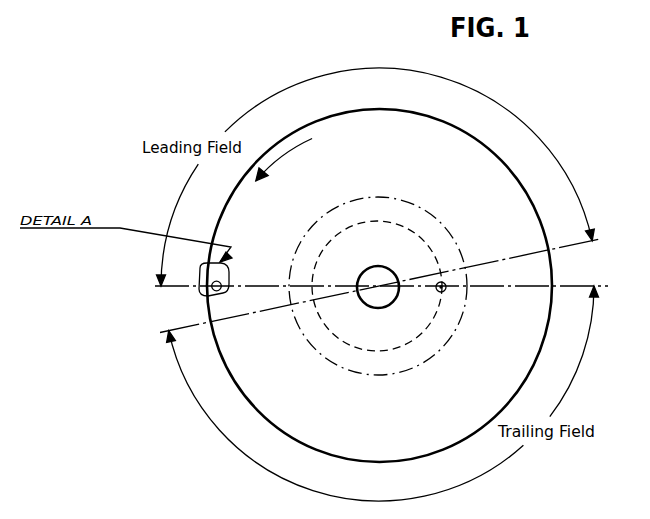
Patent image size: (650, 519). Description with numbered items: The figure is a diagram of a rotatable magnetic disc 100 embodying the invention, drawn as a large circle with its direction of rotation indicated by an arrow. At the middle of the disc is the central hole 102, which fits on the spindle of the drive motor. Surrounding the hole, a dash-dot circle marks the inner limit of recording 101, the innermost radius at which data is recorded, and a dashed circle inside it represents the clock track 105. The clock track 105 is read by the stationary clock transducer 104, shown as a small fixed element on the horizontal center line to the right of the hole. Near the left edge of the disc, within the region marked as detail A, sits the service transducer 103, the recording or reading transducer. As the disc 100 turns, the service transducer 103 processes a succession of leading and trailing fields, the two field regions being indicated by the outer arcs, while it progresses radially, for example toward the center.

The disc 100 is at (472, 151).
The inner limit of recording 101 is at (437, 233).
The central hole 102 is at (396, 293).
The service transducer 103 is at (221, 291).
The stationary clock transducer 104 is at (447, 290).
The clock track 105 is at (359, 350).